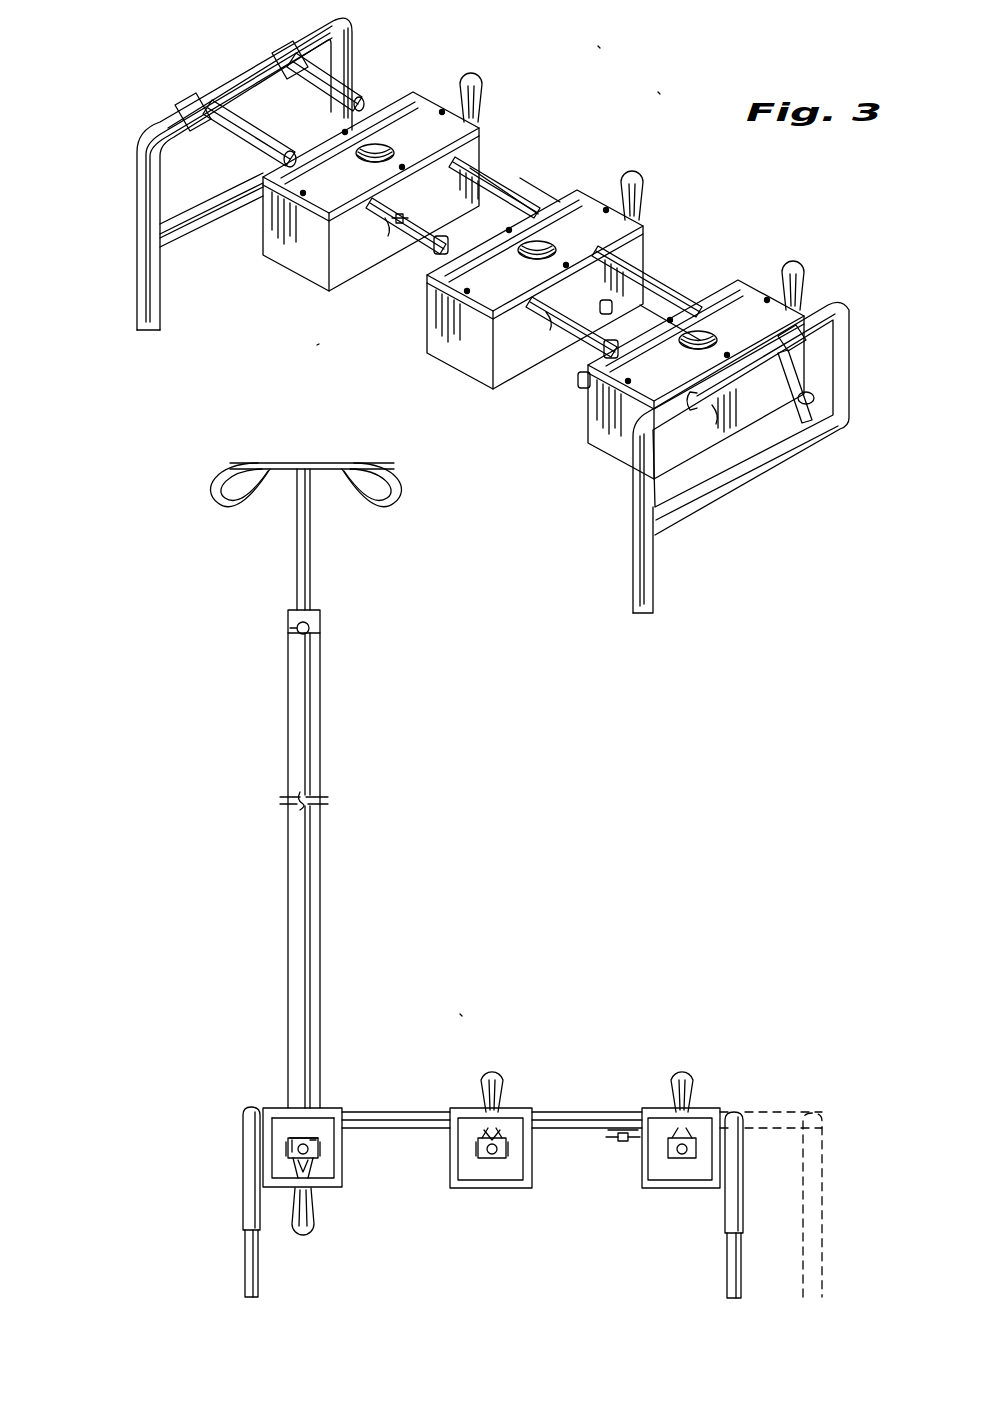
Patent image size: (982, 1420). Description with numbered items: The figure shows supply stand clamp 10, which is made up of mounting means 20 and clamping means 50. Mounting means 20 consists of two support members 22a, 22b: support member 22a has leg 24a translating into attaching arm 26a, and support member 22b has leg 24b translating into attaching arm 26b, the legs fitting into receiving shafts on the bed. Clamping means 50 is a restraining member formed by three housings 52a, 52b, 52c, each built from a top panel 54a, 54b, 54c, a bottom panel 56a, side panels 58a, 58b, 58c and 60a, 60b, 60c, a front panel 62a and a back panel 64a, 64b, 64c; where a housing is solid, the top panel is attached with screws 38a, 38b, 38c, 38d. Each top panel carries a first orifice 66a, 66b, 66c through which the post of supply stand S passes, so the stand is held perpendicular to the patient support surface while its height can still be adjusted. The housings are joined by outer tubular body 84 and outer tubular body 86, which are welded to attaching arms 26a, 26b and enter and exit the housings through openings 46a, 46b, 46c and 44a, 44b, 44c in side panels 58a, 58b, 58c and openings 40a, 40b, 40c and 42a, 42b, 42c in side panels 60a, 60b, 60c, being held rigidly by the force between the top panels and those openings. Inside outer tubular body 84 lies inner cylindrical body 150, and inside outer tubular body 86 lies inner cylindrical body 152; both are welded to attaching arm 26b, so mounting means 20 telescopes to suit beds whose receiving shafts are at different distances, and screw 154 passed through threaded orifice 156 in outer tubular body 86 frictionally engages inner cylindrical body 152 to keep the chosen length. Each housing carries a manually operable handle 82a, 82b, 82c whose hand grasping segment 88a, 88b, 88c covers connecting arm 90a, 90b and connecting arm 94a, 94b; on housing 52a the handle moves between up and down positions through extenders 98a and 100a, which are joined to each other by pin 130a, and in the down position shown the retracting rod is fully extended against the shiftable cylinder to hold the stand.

In FIG. 3, the supply stand clamp 10 is at (603, 50).
In FIG. 3, the mounting means 20 is at (97, 92).
In FIG. 3, the support member 22a is at (758, 500).
In FIG. 3, the support member 22b is at (125, 190).
In FIG. 3, the leg 24a is at (632, 566).
In FIG. 4, the leg 24a is at (243, 1280).
In FIG. 3, the leg 24b is at (140, 278).
In FIG. 4, the leg 24b is at (725, 1280).
In FIG. 3, the attaching arm 26a is at (812, 298).
In FIG. 3, the attaching arm 26b is at (322, 28).
In FIG. 3, the screw 38a is at (805, 320).
In FIG. 3, the screw 38b is at (608, 300).
In FIG. 3, the screw 38c is at (586, 385).
In FIG. 3, the screw 38d is at (815, 400).
In FIG. 3, the opening 40a is at (590, 360).
In FIG. 3, the opening 40b is at (412, 300).
In FIG. 3, the opening 40c is at (275, 152).
In FIG. 3, the opening 42a is at (680, 300).
In FIG. 3, the opening 42b is at (538, 190).
In FIG. 3, the opening 42c is at (342, 113).
In FIG. 3, the opening 44a is at (716, 410).
In FIG. 3, the opening 44b is at (548, 318).
In FIG. 3, the opening 44c is at (385, 225).
In FIG. 3, the opening 46a is at (812, 370).
In FIG. 3, the opening 46b is at (632, 250).
In FIG. 3, the opening 46c is at (463, 188).
In FIG. 3, the clamping means 50 is at (660, 95).
In FIG. 4, the clamping means 50 is at (462, 1016).
In FIG. 3, the housing 52a is at (588, 492).
In FIG. 4, the housing 52a is at (332, 1082).
In FIG. 3, the housing 52b is at (400, 396).
In FIG. 4, the housing 52b is at (450, 1085).
In FIG. 3, the housing 52c is at (248, 302).
In FIG. 4, the housing 52c is at (690, 1082).
In FIG. 3, the top panel 54a is at (760, 262).
In FIG. 3, the top panel 54b is at (636, 222).
In FIG. 3, the top panel 54c is at (455, 124).
In FIG. 4, the bottom panel 56a is at (328, 1190).
In FIG. 3, the side panel 58a is at (725, 392).
In FIG. 3, the side panel 58b is at (512, 386).
In FIG. 3, the side panel 58c is at (342, 292).
In FIG. 4, the side panel 60a is at (342, 1182).
In FIG. 4, the side panel 60b is at (532, 1180).
In FIG. 4, the side panel 60c is at (722, 1160).
In FIG. 4, the front panel 62a is at (290, 1108).
In FIG. 3, the back panel 64a is at (635, 458).
In FIG. 3, the back panel 64b is at (488, 340).
In FIG. 3, the back panel 64c is at (300, 248).
In FIG. 3, the first orifice 66a is at (715, 336).
In FIG. 3, the first orifice 66b is at (522, 250).
In FIG. 3, the first orifice 66c is at (354, 156).
In FIG. 4, the manually operable handle 82a is at (290, 1180).
In FIG. 4, the manually operable handle 82b is at (492, 1160).
In FIG. 4, the manually operable handle 82c is at (680, 1160).
In FIG. 3, the outer tubular body 84 is at (403, 268).
In FIG. 3, the outer tubular body 86 is at (530, 182).
In FIG. 4, the outer tubular body 86 is at (578, 1118).
In FIG. 3, the hand grasping segment 88a is at (800, 274).
In FIG. 4, the hand grasping segment 88a is at (303, 1211).
In FIG. 3, the hand grasping segment 88b is at (632, 176).
In FIG. 4, the hand grasping segment 88b is at (492, 1092).
In FIG. 3, the hand grasping segment 88c is at (482, 70).
In FIG. 4, the hand grasping segment 88c is at (682, 1092).
In FIG. 4, the connecting arm 90a is at (314, 1150).
In FIG. 4, the connecting arm 90b is at (506, 1136).
In FIG. 4, the connecting arm 94a is at (292, 1160).
In FIG. 4, the connecting arm 94b is at (478, 1145).
In FIG. 4, the extender 98a is at (316, 1140).
In FIG. 4, the extender 100a is at (295, 1148).
In FIG. 4, the pin 130a is at (310, 1140).
In FIG. 3, the inner cylindrical body 150 is at (222, 95).
In FIG. 3, the inner cylindrical body 152 is at (280, 56).
In FIG. 4, the screw 154 is at (625, 1148).
In FIG. 4, the threaded orifice 156 is at (632, 1120).
In FIG. 4, the supply stand S is at (296, 698).